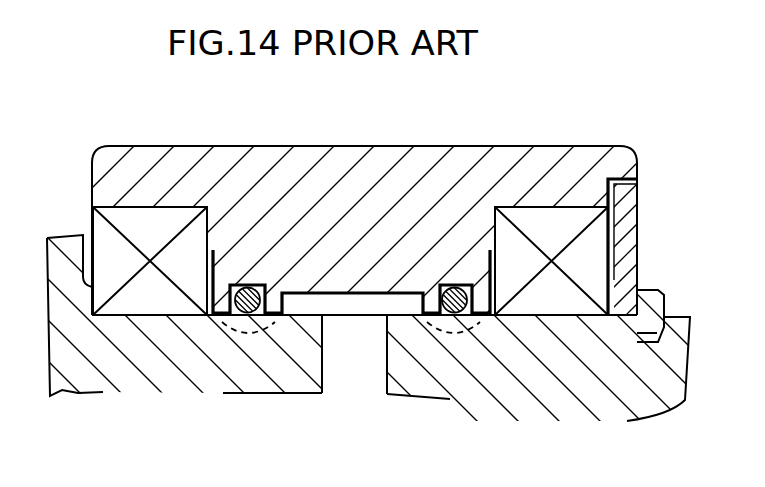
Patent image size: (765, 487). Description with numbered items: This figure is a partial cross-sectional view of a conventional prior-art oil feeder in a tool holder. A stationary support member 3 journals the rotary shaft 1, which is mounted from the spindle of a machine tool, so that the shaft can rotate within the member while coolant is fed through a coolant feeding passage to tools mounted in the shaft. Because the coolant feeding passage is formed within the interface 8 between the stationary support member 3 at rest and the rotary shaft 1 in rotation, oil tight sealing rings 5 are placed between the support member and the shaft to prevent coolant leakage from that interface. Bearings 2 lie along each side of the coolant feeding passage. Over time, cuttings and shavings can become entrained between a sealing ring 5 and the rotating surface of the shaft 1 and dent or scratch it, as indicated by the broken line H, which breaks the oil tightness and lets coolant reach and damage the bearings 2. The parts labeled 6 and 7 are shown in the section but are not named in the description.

The rotary shaft 1 is at (187, 352).
The bearings 2 is at (537, 232).
The stationary support member 3 is at (341, 172).
The oil tight sealing ring 5 is at (454, 288).
The spacer plate 6 is at (380, 303).
The shaft bore 7 is at (363, 348).
The interface 8 is at (283, 297).
The dent or scratch H is at (477, 332).